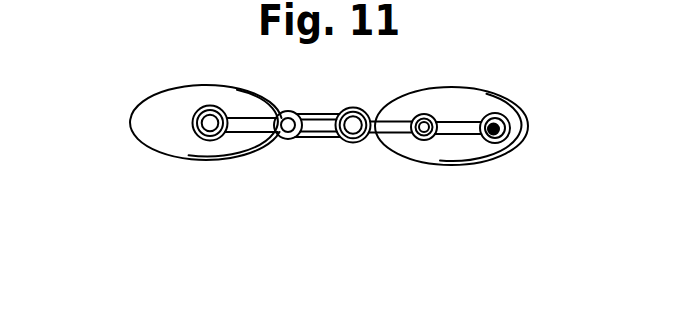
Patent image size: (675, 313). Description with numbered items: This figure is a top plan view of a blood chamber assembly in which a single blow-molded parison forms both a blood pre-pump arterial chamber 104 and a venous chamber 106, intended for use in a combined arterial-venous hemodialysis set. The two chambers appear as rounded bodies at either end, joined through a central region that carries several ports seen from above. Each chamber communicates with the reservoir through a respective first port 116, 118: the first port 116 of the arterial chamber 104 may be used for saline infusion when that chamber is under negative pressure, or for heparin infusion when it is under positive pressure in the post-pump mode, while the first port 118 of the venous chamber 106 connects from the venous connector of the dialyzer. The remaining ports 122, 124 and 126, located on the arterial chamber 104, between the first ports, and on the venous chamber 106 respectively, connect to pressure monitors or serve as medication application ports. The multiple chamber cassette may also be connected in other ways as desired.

The blood pre-pump arterial chamber 104 is at (160, 94).
The venous chamber 106 is at (493, 95).
The first port 116 is at (288, 128).
The first port 118 is at (352, 128).
The port 122 is at (210, 126).
The port 124 is at (423, 130).
The port 126 is at (496, 134).